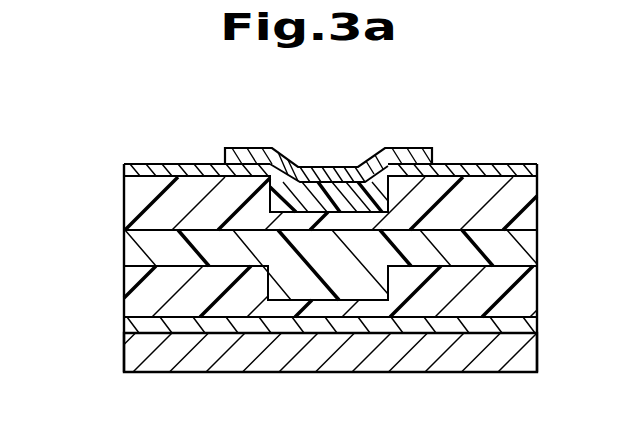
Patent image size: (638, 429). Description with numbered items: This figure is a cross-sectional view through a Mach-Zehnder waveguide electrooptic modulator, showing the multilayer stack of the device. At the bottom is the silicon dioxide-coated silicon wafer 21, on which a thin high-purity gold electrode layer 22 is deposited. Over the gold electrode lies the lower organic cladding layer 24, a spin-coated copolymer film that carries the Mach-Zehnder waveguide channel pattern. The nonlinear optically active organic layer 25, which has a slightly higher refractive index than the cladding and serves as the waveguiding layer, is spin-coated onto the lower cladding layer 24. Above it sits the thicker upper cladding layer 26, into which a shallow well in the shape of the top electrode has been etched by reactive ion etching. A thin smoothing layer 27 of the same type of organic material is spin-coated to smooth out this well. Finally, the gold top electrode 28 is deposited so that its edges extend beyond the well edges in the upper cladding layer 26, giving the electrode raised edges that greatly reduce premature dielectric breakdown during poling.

The silicon dioxide-coated silicon wafer 21 is at (124, 357).
The electrode layer 22 is at (124, 323).
The lower organic cladding layer 24 is at (124, 292).
The nonlinear optically active organic layer 25 is at (124, 240).
The upper cladding layer 26 is at (124, 202).
The smoothing layer 27 is at (124, 164).
The top electrode 28 is at (226, 148).